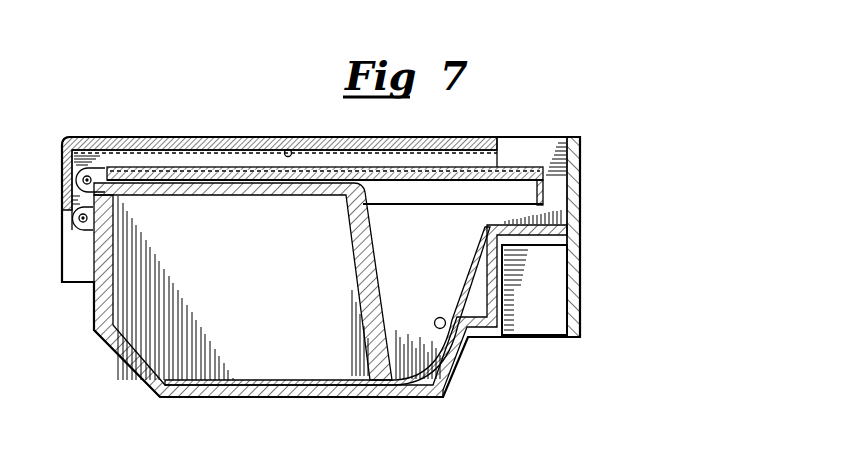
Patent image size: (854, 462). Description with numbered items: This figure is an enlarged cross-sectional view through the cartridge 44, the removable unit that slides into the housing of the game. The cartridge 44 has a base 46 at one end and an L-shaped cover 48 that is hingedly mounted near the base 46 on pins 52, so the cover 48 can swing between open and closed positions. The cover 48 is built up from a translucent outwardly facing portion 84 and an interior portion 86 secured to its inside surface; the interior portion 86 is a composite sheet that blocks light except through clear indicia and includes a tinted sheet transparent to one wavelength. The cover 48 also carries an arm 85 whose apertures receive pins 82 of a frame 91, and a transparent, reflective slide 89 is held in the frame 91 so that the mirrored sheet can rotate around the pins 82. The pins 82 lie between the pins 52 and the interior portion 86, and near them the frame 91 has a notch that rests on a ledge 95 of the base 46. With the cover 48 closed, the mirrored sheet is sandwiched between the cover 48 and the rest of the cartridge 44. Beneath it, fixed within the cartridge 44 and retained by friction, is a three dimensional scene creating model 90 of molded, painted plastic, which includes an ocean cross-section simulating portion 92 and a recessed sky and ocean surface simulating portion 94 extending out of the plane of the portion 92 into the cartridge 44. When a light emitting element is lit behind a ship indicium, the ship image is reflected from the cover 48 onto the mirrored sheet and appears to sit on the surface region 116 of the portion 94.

The cartridge 44 is at (534, 110).
The base 46 is at (94, 325).
The L-shaped cover 48 is at (221, 135).
The pins 52 is at (83, 229).
The pins 82 is at (87, 176).
The translucent outwardly facing portion 84 is at (147, 137).
The arm 85 is at (66, 266).
The interior portion 86 is at (288, 149).
The slide 89 is at (460, 167).
The three dimensional scene creating model 90 is at (386, 231).
The frame 91 is at (543, 192).
The ocean cross-section simulating portion 92 is at (171, 182).
The sky and ocean surface simulating portion 94 is at (445, 328).
The ledge 95 is at (77, 189).
The surface region 116 is at (362, 194).